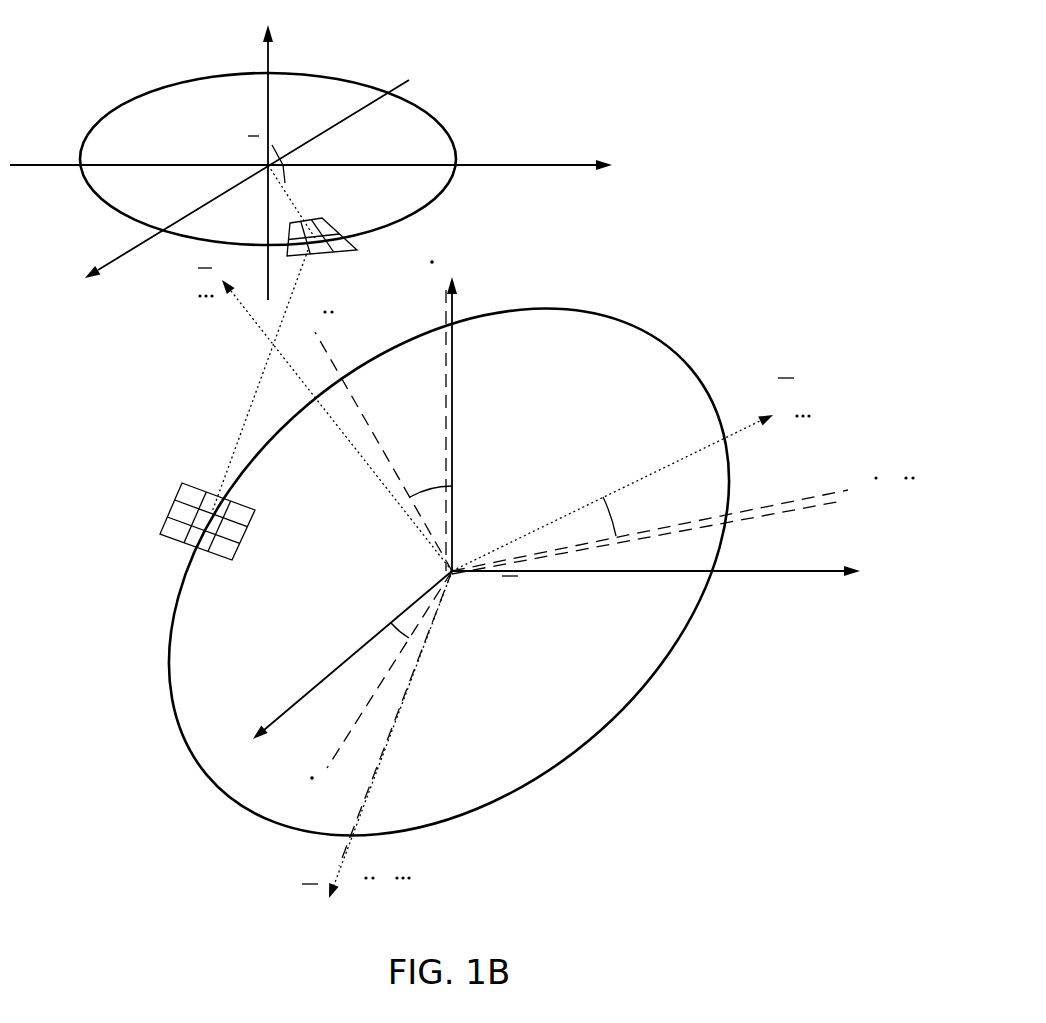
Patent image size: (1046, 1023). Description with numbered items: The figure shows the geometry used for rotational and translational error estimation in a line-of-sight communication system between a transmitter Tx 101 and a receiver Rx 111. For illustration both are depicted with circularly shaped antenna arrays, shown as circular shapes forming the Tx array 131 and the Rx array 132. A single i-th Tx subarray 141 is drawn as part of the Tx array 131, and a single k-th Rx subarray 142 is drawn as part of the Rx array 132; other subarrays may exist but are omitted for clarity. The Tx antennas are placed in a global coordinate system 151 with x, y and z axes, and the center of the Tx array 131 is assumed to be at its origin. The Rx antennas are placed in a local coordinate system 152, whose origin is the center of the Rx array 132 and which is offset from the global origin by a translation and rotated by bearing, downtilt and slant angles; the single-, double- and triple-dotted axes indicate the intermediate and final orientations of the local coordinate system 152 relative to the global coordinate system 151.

The transmitter Tx 101 is at (118, 67).
The receiver Rx 111 is at (110, 596).
The Tx array 131 is at (333, 77).
The Rx array 132 is at (625, 715).
The i-th Tx subarray 141 is at (331, 222).
The k-th Rx subarray 142 is at (172, 505).
The global coordinate system (GCS) 151 is at (236, 176).
The local coordinate system (LCS) 152 is at (436, 573).